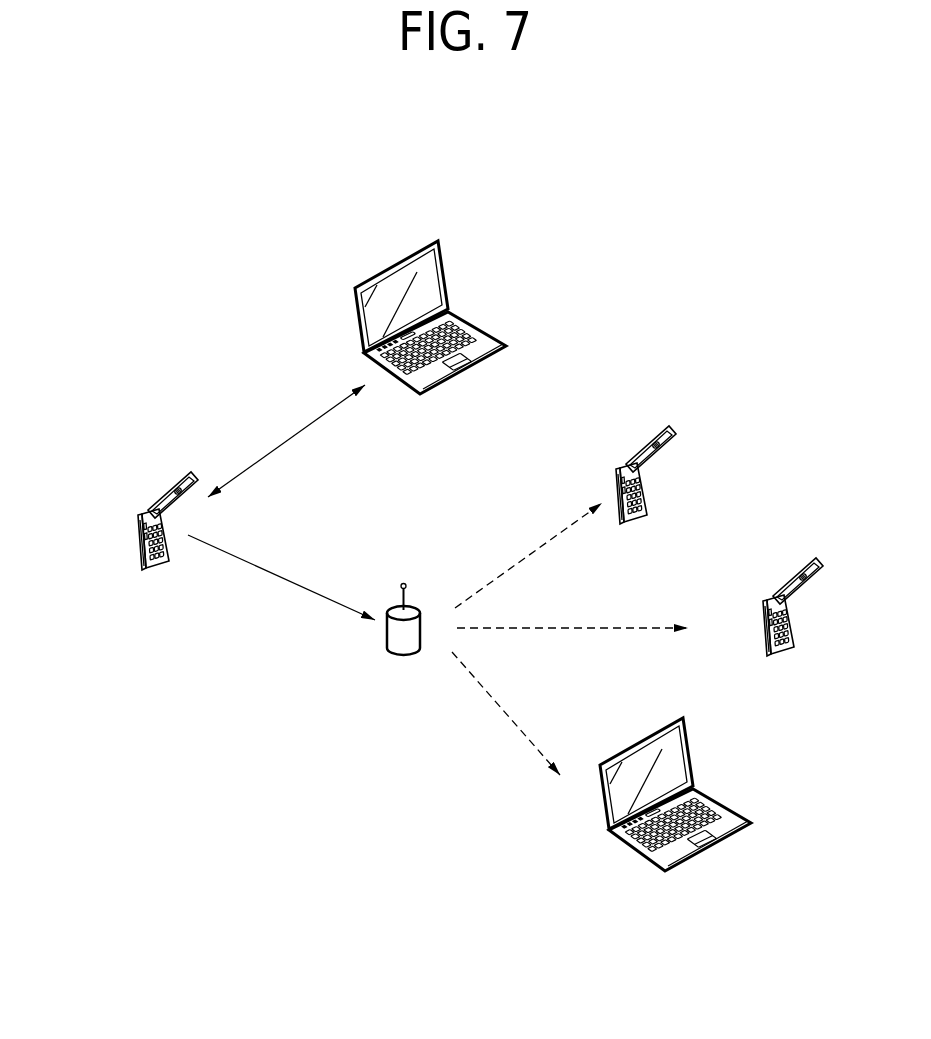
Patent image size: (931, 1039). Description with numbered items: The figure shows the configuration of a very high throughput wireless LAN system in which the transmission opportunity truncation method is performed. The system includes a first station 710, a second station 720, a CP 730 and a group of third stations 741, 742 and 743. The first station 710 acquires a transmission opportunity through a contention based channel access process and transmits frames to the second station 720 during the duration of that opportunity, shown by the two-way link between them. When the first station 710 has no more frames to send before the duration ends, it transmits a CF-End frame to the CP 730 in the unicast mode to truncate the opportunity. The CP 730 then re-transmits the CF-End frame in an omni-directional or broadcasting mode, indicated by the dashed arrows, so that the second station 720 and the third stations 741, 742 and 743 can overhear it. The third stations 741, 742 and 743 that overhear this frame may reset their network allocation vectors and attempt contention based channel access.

The first station 710 is at (138, 530).
The second station 720 is at (447, 277).
The CP 730 is at (388, 650).
The third station 741 is at (652, 490).
The third station 742 is at (797, 618).
The third station 743 is at (737, 810).